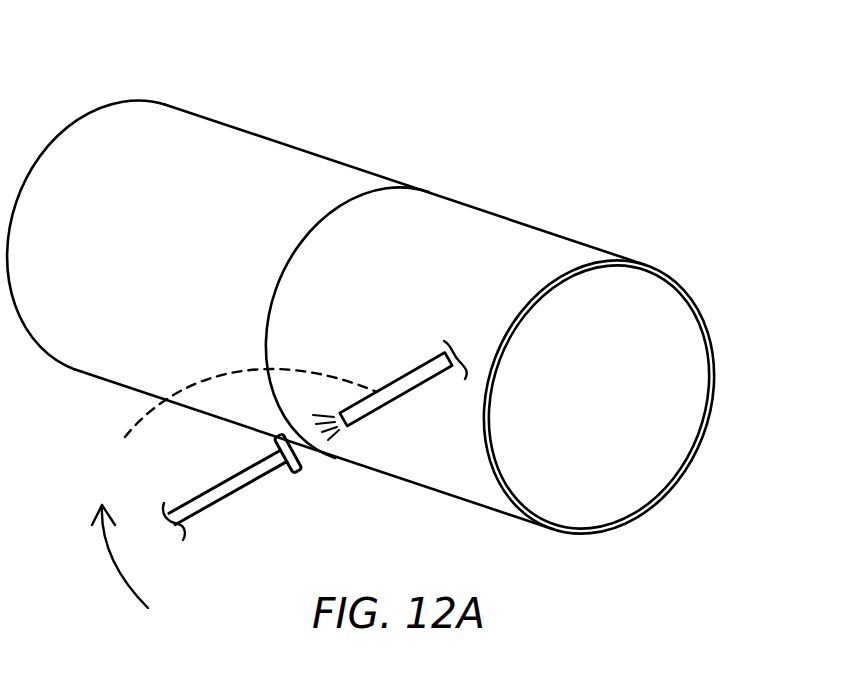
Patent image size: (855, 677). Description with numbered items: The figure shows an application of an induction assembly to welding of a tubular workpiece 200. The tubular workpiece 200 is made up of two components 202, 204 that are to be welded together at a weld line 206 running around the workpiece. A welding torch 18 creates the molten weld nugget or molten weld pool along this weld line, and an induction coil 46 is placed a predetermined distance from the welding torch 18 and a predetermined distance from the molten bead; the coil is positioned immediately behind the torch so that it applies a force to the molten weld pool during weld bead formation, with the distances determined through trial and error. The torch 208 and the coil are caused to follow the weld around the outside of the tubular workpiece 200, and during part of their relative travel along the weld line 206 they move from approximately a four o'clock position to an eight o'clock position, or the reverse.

The tubular workpiece 200 is at (380, 290).
The component 202 is at (260, 150).
The component 204 is at (532, 247).
The weld line 206 is at (403, 188).
The torch 208 is at (115, 572).
The welding torch 18 is at (282, 400).
The induction coil 46 is at (292, 477).